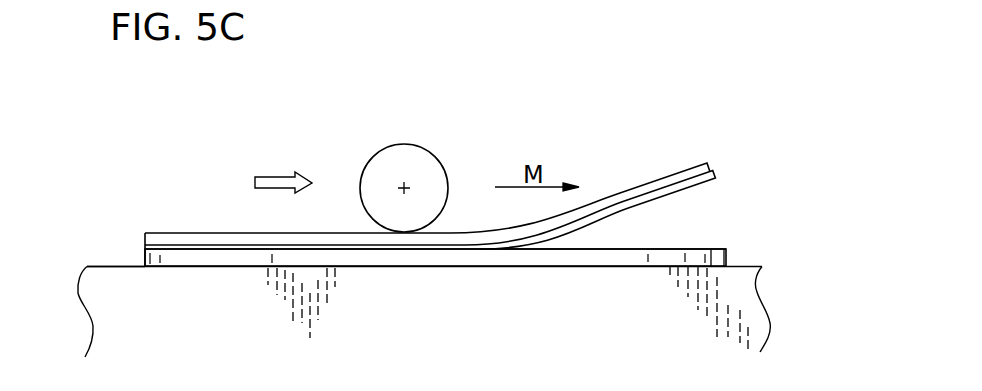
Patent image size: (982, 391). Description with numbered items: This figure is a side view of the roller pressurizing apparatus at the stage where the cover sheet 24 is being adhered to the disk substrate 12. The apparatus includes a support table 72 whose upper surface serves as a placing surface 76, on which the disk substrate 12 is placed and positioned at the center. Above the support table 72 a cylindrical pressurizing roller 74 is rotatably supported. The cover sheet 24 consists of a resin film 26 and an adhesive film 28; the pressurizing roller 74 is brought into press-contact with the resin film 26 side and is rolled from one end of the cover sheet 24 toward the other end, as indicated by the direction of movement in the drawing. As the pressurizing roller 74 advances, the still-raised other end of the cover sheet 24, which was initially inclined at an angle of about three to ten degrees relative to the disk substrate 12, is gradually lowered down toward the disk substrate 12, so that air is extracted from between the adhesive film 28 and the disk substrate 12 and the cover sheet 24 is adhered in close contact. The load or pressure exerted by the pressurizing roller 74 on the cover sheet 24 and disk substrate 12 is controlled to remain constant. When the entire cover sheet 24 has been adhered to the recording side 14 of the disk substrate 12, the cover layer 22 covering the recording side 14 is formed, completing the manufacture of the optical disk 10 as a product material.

The optical disk 10 is at (212, 161).
The disk substrate 12 is at (726, 256).
The recording side 14 is at (623, 248).
The cover layer 22 is at (145, 232).
The cover sheet 24 is at (487, 176).
The resin film 26 is at (711, 168).
The adhesive film 28 is at (631, 196).
The support table 72 is at (77, 293).
The pressurizing roller 74 is at (413, 145).
The placing surface 76 is at (118, 266).